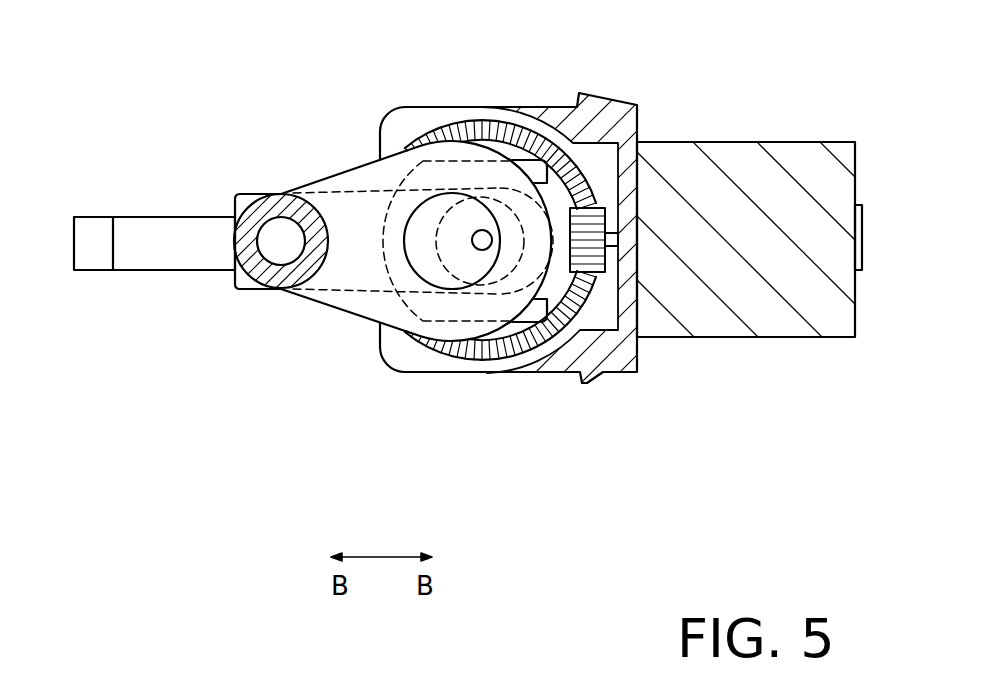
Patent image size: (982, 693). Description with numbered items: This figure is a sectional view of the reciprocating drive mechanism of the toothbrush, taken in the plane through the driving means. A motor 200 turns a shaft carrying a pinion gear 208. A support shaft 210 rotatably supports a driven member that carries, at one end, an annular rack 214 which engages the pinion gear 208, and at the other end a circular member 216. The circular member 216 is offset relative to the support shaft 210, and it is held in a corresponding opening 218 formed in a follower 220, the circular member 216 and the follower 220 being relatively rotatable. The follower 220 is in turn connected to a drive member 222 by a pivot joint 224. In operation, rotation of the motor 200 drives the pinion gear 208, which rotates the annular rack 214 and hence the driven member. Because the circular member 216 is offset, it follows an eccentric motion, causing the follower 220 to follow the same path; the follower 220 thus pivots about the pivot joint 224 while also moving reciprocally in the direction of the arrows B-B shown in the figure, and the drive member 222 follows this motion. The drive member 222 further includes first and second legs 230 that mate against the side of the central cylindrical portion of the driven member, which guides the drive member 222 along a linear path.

The motor 200 is at (793, 157).
The pinion gear 208 is at (597, 208).
The support shaft 210 is at (484, 250).
The annular rack 214 is at (612, 320).
The circular member 216 is at (433, 278).
The opening 218 is at (417, 205).
The follower 220 is at (358, 283).
The drive member 222 is at (146, 252).
The pivot joint 224 is at (281, 193).
The first and second legs 230 is at (556, 112).